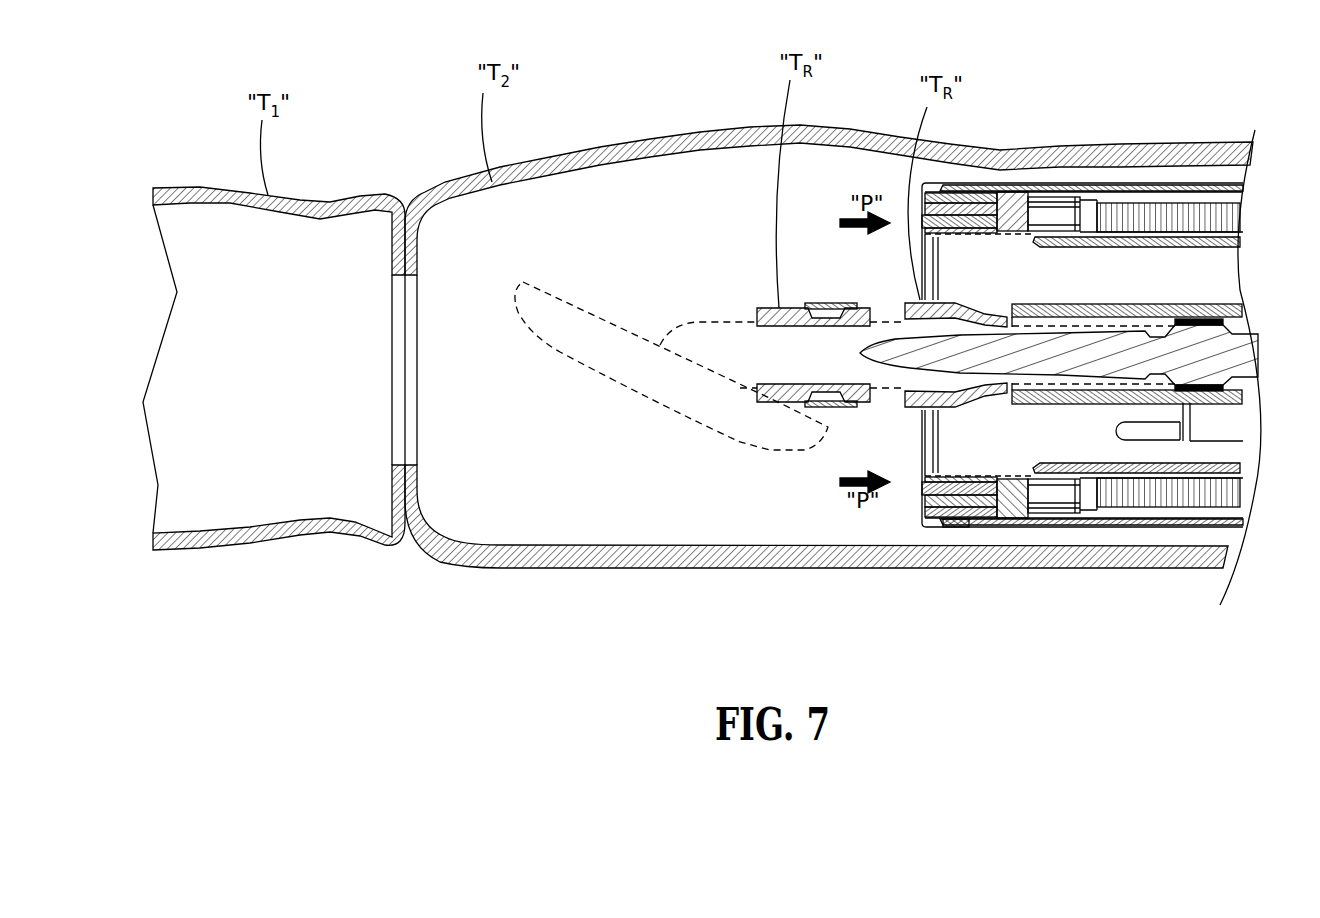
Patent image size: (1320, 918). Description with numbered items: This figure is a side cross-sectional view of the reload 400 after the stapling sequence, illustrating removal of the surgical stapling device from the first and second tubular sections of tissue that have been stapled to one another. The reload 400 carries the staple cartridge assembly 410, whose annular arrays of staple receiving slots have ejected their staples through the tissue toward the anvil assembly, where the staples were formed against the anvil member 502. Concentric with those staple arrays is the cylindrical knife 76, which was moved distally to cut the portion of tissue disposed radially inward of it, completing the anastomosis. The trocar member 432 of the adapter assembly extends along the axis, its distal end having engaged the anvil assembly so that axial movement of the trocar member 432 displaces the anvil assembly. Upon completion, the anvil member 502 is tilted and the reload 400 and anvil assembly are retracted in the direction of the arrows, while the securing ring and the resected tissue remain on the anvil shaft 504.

The cylindrical knife 76 is at (940, 265).
The reload 400 is at (816, 306).
The staple cartridge assembly 410 is at (977, 525).
The trocar member 432 is at (1020, 358).
The anvil member 502 is at (565, 300).
The anvil shaft 504 is at (895, 392).